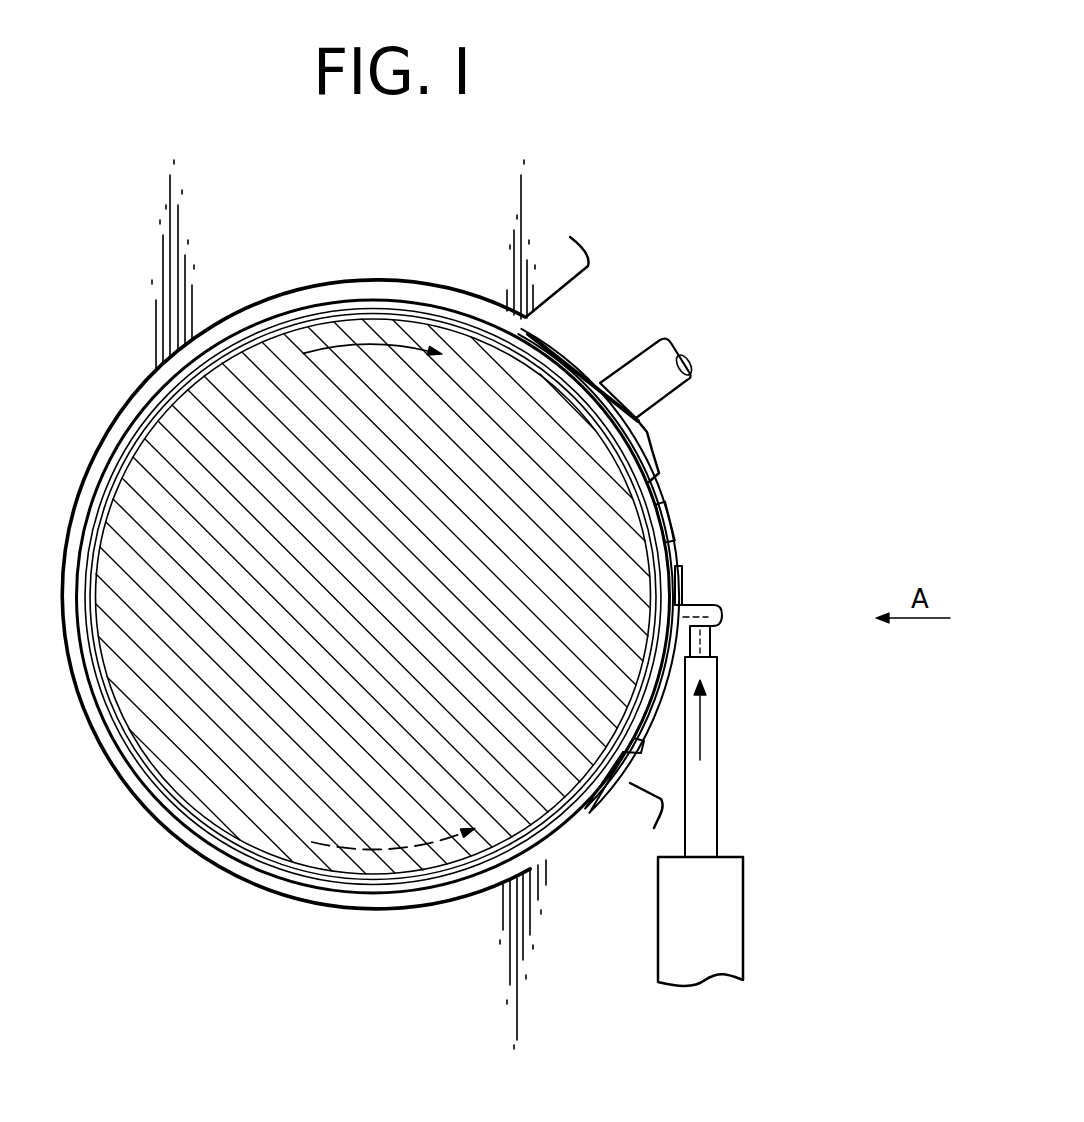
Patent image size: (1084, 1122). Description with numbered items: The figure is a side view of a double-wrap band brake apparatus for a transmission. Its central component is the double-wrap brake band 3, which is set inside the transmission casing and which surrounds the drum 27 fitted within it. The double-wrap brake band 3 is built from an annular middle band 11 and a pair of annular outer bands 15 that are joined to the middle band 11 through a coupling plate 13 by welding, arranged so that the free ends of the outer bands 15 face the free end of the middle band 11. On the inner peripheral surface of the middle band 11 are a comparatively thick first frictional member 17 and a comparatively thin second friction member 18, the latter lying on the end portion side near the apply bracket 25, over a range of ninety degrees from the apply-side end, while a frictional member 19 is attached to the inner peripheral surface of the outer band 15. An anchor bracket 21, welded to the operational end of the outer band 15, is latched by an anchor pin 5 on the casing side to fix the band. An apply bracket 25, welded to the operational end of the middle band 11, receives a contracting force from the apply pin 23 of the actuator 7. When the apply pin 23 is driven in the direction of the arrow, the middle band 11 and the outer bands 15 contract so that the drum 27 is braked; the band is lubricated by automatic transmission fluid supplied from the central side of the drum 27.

The double-wrap brake band 3 is at (771, 411).
The anchor pin 5 is at (642, 370).
The actuator 7 is at (727, 922).
The middle band 11 is at (657, 493).
The coupling plate 13 is at (672, 528).
The outer band 15 is at (467, 317).
The first frictional member 17 is at (352, 308).
The second friction member 18 is at (373, 597).
The frictional member 19 is at (373, 596).
The anchor bracket 21 is at (640, 429).
The apply pin 23 is at (712, 757).
The apply bracket 25 is at (722, 617).
The drum 27 is at (361, 606).